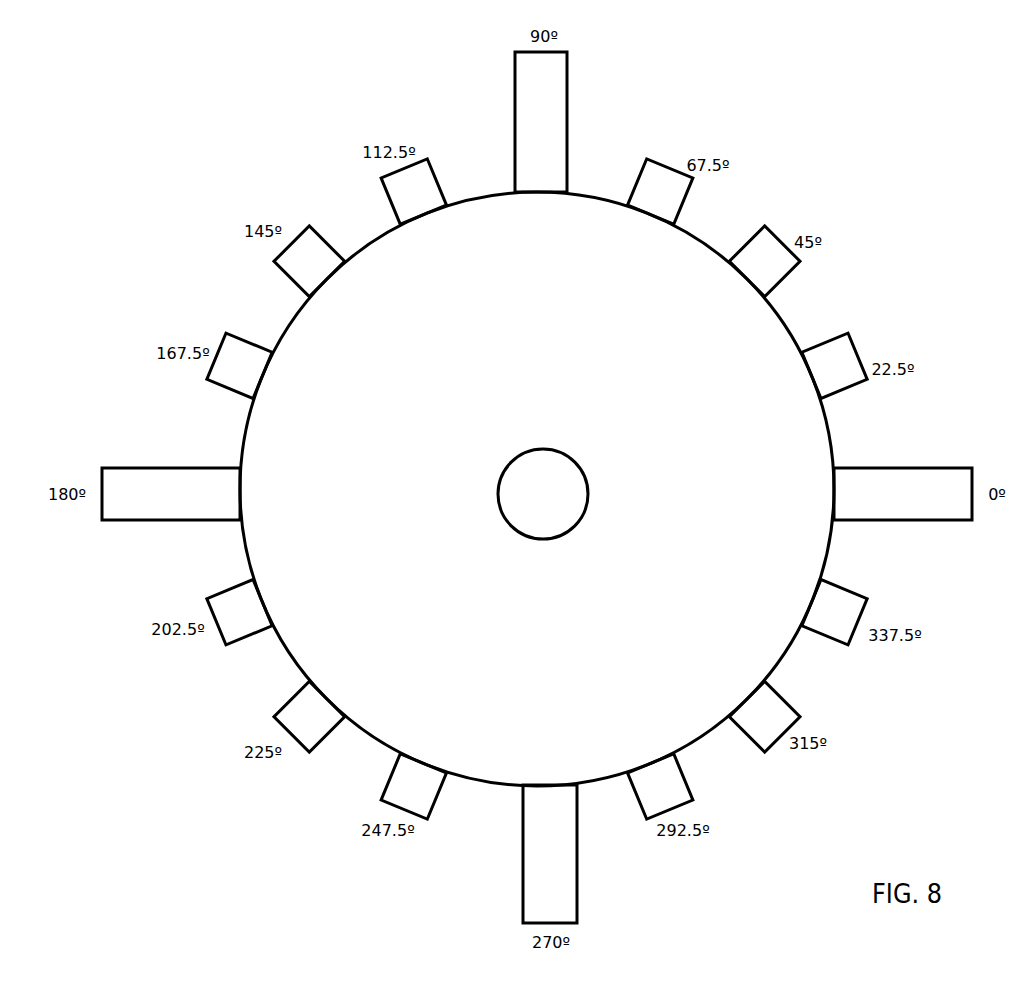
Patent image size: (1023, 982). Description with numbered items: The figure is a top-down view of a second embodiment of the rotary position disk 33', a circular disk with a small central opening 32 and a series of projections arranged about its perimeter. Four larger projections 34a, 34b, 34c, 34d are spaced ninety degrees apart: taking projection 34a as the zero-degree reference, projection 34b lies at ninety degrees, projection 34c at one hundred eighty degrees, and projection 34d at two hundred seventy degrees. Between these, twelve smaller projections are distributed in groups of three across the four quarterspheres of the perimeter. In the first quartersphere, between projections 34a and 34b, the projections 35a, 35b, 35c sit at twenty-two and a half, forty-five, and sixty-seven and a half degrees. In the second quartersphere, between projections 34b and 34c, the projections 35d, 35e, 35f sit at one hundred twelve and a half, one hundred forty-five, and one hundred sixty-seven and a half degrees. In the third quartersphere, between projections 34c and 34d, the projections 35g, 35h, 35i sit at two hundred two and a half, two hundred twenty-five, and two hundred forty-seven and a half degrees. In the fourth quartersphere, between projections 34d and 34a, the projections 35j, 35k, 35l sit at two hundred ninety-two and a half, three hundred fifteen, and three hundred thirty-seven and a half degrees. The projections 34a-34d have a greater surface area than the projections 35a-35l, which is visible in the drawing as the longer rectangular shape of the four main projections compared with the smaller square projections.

The central shaft opening 32 is at (498, 507).
The rotary position disk 33' is at (523, 489).
The projection 34a is at (888, 503).
The projection 34b is at (528, 175).
The projection 34c is at (155, 503).
The projection 34d is at (534, 823).
The projection 35a is at (850, 375).
The projection 35b is at (780, 270).
The projection 35c is at (645, 201).
The projection 35d is at (429, 201).
The projection 35e is at (294, 270).
The projection 35f is at (224, 375).
The projection 35g is at (224, 621).
The projection 35h is at (298, 726).
The projection 35i is at (427, 796).
The projection 35j is at (647, 796).
The projection 35k is at (780, 726).
The projection 35l is at (822, 621).